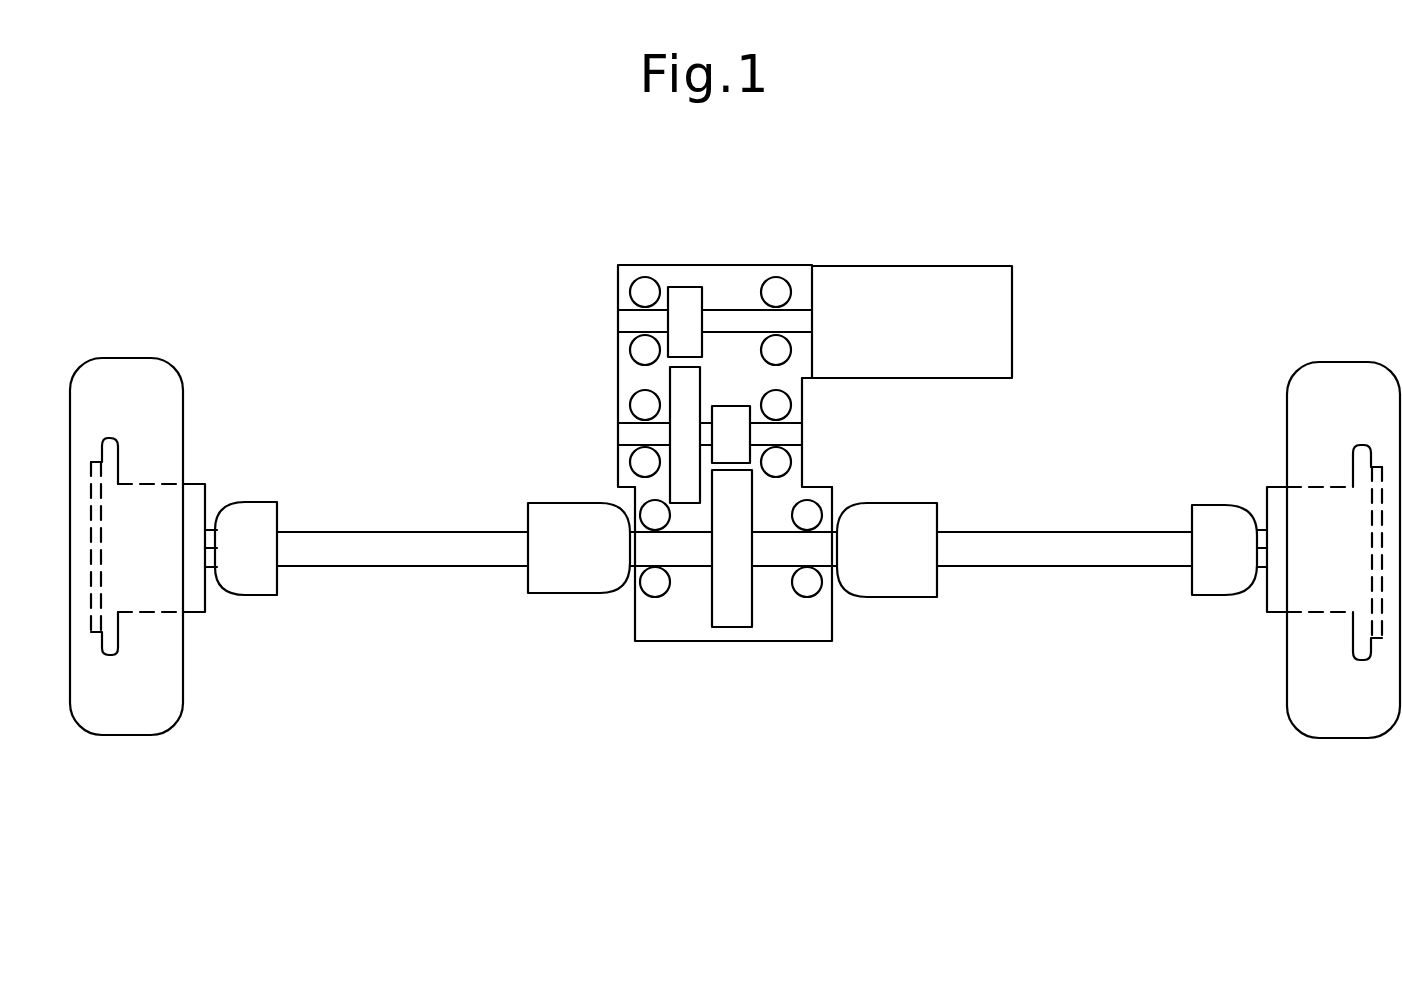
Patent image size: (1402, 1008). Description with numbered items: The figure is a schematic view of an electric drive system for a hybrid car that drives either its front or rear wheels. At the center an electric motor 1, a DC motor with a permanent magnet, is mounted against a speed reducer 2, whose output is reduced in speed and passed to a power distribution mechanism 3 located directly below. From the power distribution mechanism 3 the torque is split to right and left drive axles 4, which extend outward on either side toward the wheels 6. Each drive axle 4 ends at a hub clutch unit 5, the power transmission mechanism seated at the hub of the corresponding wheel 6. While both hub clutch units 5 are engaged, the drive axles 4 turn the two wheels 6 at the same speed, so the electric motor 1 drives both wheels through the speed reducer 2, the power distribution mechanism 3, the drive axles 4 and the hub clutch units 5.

The electric motor 1 is at (925, 283).
The speed reducer 2 is at (625, 373).
The power distribution mechanism 3 is at (783, 612).
The drive axle 4 is at (402, 552).
The hub clutch unit 5 is at (203, 497).
The wheel 6 is at (133, 713).